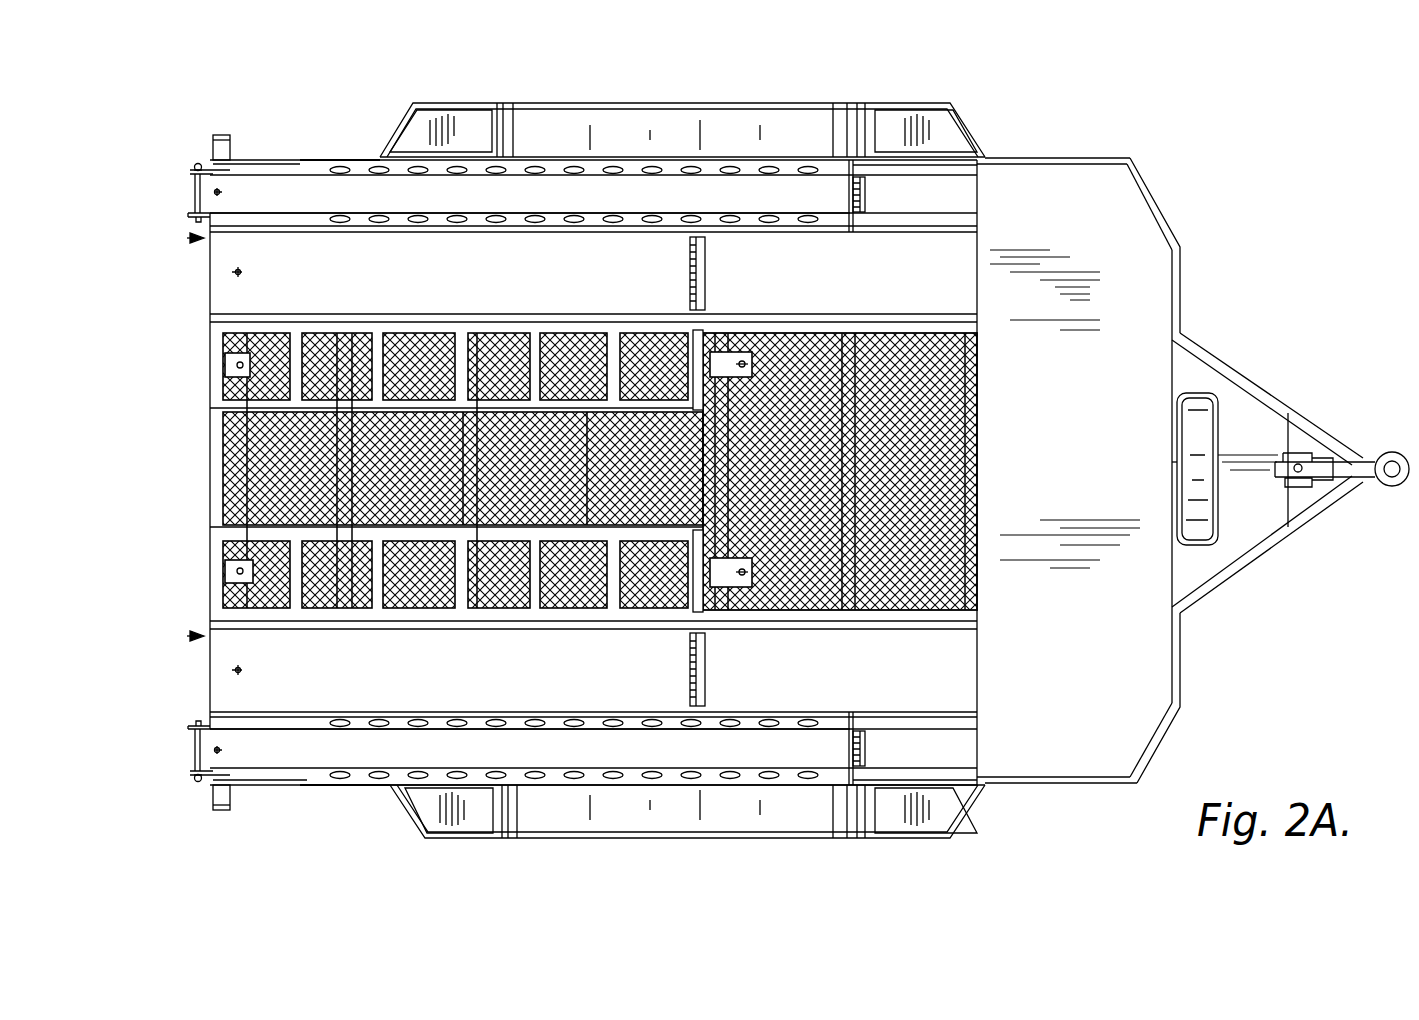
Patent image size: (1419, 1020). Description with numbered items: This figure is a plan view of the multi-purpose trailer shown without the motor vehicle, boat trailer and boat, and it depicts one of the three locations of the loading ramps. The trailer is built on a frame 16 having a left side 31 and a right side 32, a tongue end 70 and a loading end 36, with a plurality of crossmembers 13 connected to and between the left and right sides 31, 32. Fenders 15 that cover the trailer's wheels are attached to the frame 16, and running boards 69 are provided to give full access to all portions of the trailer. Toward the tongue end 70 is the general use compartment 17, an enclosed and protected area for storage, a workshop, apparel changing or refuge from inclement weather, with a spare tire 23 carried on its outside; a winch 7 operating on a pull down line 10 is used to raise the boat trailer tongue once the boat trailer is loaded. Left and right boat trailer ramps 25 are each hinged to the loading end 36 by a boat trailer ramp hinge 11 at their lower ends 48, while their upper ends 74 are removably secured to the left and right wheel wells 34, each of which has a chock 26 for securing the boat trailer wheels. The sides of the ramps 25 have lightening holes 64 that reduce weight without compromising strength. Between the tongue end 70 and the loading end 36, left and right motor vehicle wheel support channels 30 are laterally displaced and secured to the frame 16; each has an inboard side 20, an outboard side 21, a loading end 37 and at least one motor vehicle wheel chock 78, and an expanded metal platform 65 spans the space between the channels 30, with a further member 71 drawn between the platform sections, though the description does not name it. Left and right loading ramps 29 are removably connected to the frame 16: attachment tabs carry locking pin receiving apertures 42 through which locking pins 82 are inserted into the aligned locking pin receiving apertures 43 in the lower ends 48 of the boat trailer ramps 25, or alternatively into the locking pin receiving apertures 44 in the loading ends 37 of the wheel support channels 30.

The winch 7 is at (1310, 490).
The pull down line 10 is at (1305, 460).
The boat trailer ramp hinge 11 is at (200, 167).
The crossmembers 13 is at (935, 330).
The fenders 15 is at (628, 120).
The frame 16 is at (1175, 748).
The general use compartment 17 is at (1140, 225).
The inboard side 20 is at (613, 317).
The outboard side 21 is at (583, 232).
The spare tire 23 is at (1205, 395).
The boat trailer ramps 25 is at (660, 205).
The chock 26 is at (866, 195).
The loading ramps 29 is at (305, 322).
The motor vehicle wheel support channels 30 is at (472, 286).
The left side 31 is at (358, 157).
The right side 32 is at (300, 786).
The wheel wells 34 is at (990, 200).
The loading end 36 is at (195, 170).
The loading end 37 is at (187, 238).
The locking pin receiving apertures 42 is at (758, 330).
The locking pin receiving apertures 43 is at (213, 192).
The locking pin receiving apertures 44 is at (236, 272).
The lower ends 48 is at (247, 185).
The lightening holes 64 is at (810, 217).
The platform 65 is at (985, 405).
The running boards 69 is at (475, 120).
The tongue end 70 is at (1240, 580).
The cross member 71 is at (693, 330).
The upper end 74 is at (837, 207).
The motor vehicle wheel chock 78 is at (706, 268).
The locking pins 82 is at (226, 366).